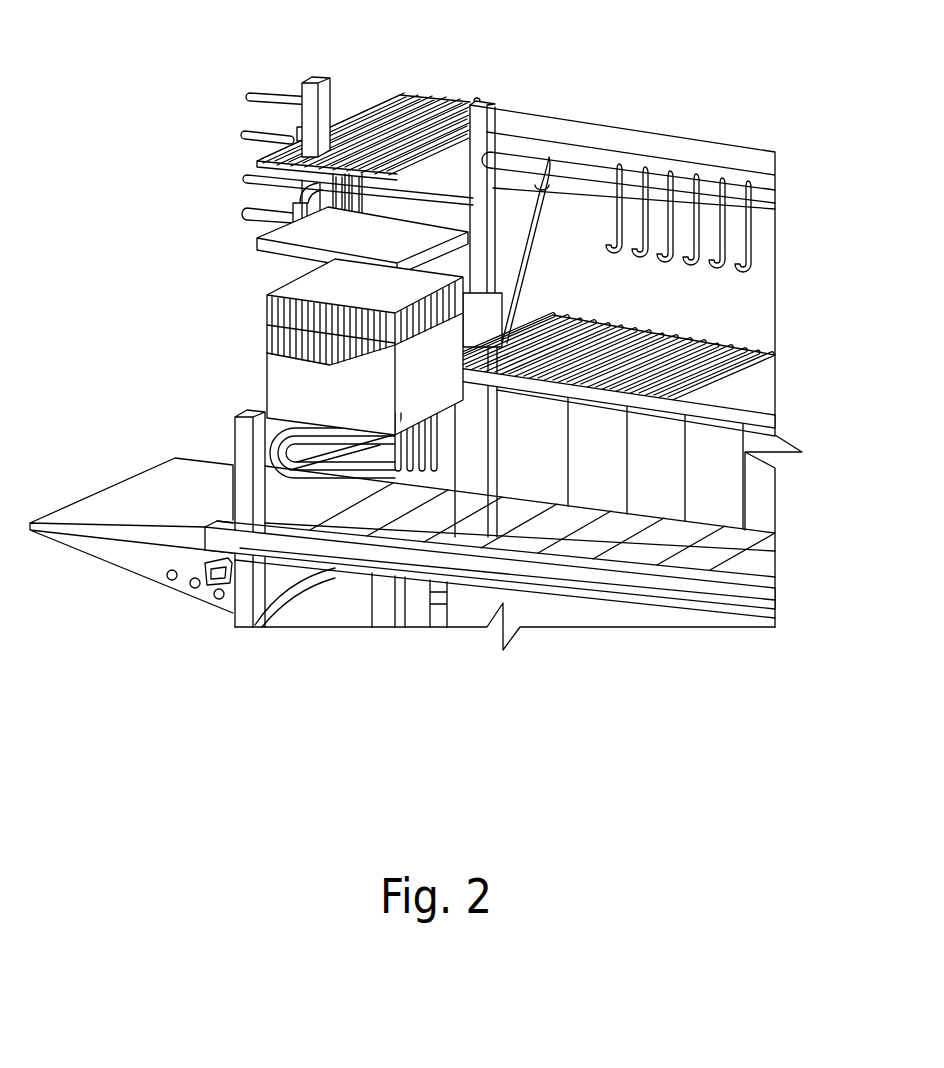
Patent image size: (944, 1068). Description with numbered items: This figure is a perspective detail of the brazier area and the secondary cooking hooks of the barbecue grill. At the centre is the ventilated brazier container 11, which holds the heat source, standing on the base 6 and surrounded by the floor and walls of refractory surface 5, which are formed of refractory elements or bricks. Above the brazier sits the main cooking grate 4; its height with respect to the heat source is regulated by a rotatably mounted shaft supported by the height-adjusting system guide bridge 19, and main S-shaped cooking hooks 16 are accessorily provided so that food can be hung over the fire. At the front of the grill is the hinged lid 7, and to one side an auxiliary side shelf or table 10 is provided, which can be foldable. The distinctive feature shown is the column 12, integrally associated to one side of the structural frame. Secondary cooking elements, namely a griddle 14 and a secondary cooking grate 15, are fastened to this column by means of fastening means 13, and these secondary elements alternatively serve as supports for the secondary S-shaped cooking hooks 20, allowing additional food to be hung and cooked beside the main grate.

The main cooking grate 4 is at (738, 346).
The floor and walls of refractory surface 5 is at (707, 573).
The base 6 is at (572, 605).
The lid 7 is at (623, 588).
The auxiliary side shelf or table 10 is at (160, 497).
The brazier container 11 is at (293, 392).
The column 12 is at (330, 93).
The fastening means 13 is at (250, 97).
The griddle 14 is at (262, 253).
The secondary cooking grate 15 is at (252, 176).
The main S-shaped cooking hooks 16 is at (753, 240).
The height-adjusting system guide bridge 19 is at (477, 152).
The secondary S-shaped cooking hooks 20 is at (363, 212).